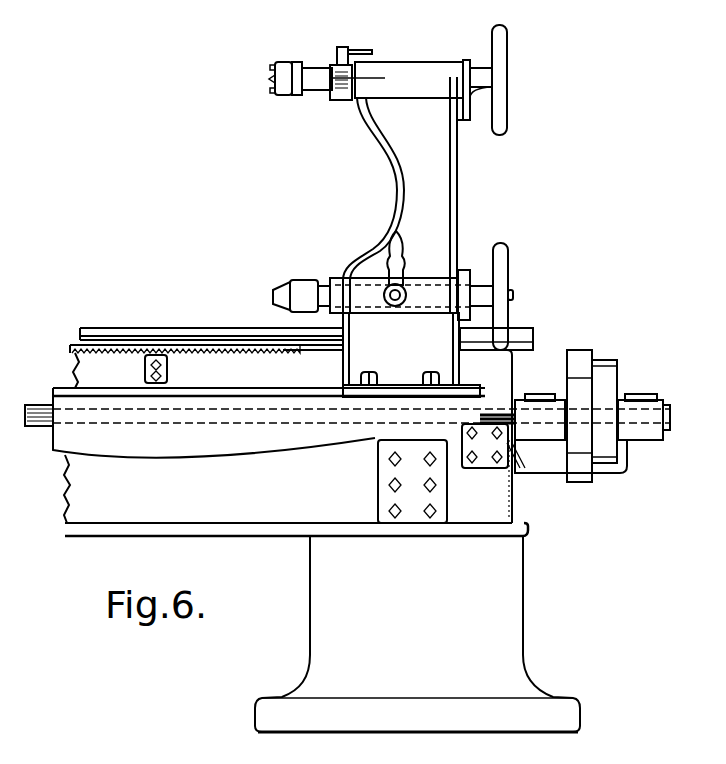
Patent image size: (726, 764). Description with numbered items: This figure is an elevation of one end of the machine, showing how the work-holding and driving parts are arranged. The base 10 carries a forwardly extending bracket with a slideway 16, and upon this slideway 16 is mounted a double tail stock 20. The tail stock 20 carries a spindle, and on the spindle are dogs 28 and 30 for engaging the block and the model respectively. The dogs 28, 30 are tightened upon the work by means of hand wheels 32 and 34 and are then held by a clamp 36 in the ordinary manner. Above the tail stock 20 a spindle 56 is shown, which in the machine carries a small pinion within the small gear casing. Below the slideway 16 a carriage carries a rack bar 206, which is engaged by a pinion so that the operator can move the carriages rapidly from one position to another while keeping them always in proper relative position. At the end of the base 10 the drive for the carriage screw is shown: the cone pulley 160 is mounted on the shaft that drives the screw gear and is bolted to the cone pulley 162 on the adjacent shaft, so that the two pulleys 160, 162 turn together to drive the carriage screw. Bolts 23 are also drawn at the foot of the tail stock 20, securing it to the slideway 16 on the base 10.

The base 10 is at (417, 634).
The slideway 16 is at (288, 392).
The double tail stock 20 is at (431, 228).
The bolts 23 is at (433, 372).
The dog 28 is at (278, 290).
The dog 30 is at (292, 90).
The hand wheel 32 is at (498, 268).
The hand wheel 34 is at (502, 102).
The clamp 36 is at (397, 273).
The spindle 56 is at (343, 53).
The cone pulley 160 is at (583, 470).
The cone pulley 162 is at (577, 443).
The rack bar 206 is at (140, 348).